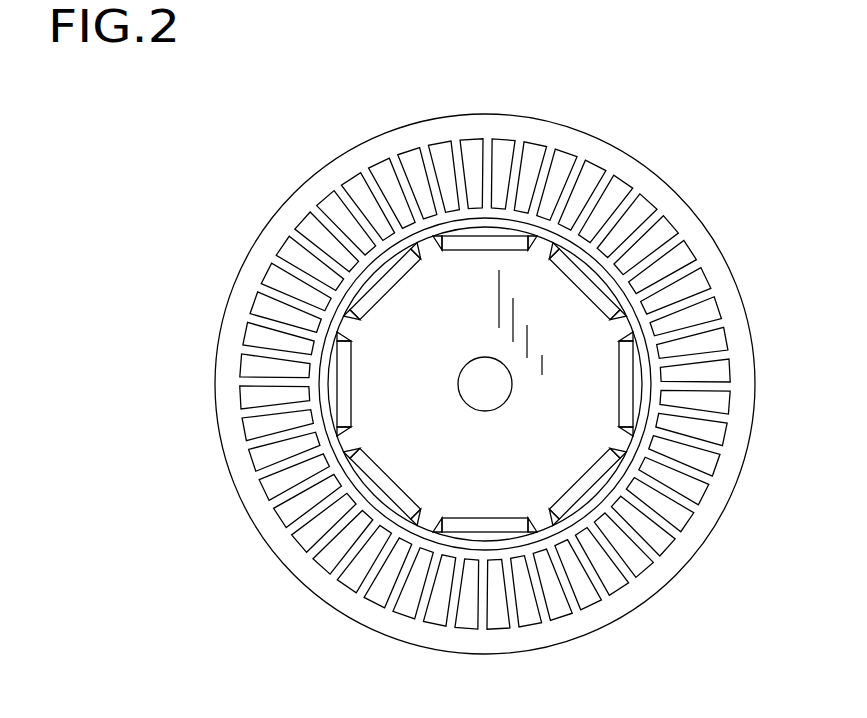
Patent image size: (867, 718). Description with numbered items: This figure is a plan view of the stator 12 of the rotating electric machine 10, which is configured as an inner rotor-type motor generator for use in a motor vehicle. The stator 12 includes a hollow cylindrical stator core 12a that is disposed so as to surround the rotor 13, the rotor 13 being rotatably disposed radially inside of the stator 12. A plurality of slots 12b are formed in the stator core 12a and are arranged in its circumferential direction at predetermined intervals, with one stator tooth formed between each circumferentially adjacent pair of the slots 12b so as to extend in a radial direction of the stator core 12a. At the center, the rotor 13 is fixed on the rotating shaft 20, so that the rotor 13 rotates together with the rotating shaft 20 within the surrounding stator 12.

The rotating electric machine 10 is at (246, 200).
The stator 12 is at (485, 350).
The stator core 12a is at (376, 158).
The slots 12b is at (495, 172).
The rotor 13 is at (562, 337).
The rotating shaft 20 is at (485, 383).